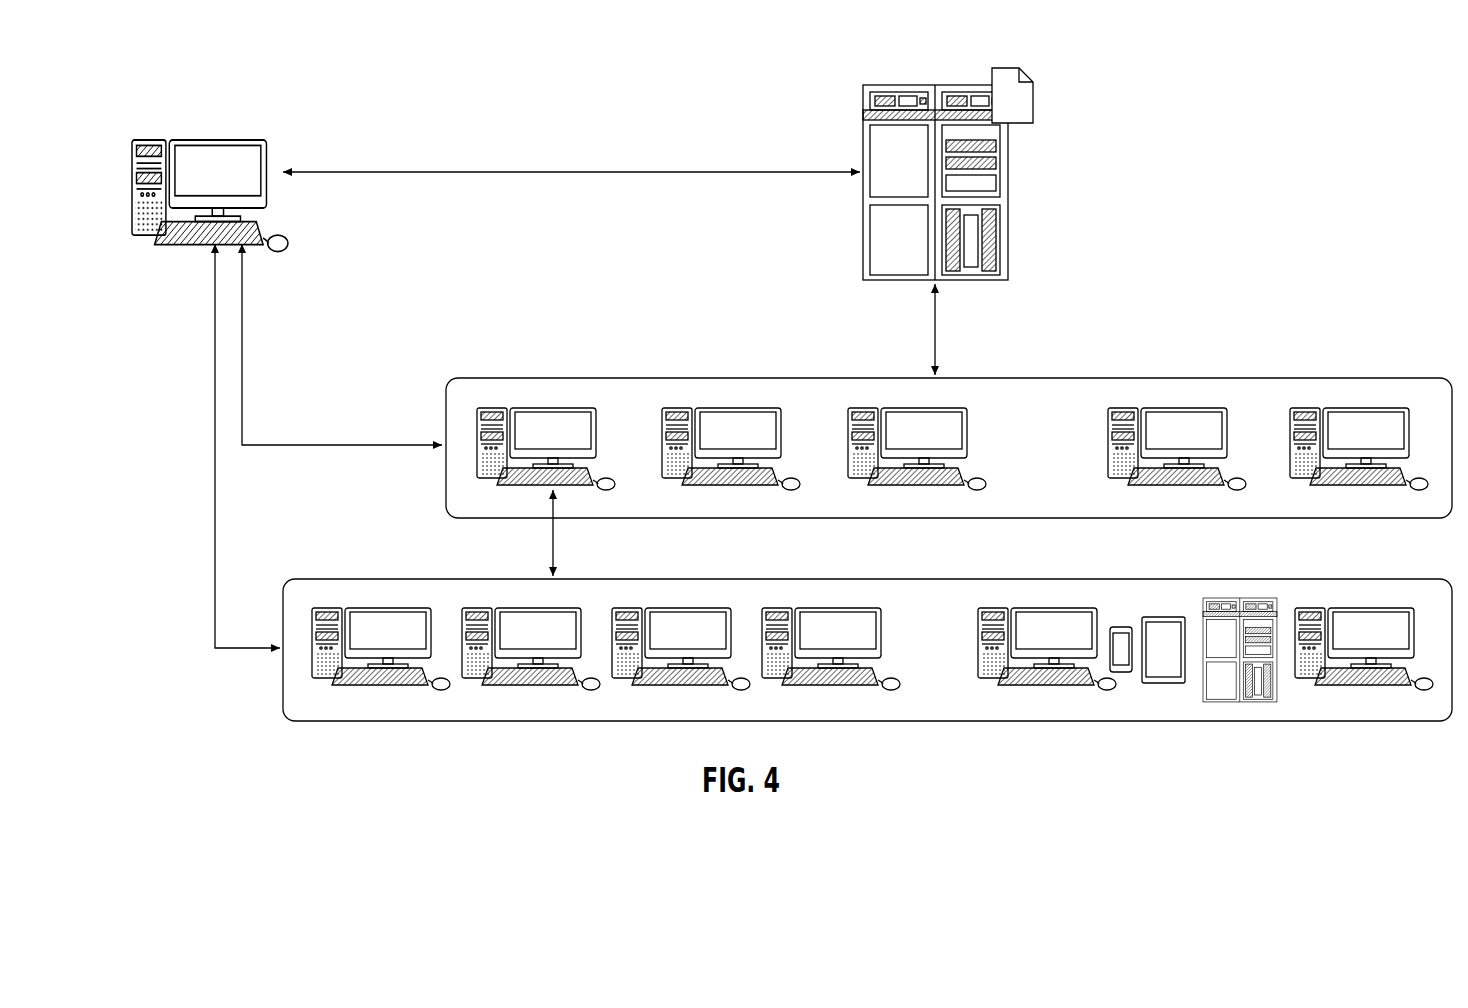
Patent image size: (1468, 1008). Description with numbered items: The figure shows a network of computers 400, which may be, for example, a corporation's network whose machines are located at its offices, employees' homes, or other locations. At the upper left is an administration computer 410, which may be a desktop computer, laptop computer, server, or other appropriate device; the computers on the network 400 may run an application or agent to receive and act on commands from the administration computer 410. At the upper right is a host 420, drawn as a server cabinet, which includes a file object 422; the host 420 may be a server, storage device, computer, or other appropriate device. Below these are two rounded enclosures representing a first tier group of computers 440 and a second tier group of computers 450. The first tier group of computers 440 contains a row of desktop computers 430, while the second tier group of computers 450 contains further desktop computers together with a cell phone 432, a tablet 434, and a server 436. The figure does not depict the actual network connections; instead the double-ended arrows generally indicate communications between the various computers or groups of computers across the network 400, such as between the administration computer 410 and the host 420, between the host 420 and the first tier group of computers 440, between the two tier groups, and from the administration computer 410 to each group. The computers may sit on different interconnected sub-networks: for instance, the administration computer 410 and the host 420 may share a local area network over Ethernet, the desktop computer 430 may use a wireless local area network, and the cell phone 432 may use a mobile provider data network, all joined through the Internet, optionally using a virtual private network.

The network of computers 400 is at (168, 64).
The administration computer 410 is at (152, 139).
The host 420 is at (862, 102).
The file object 422 is at (1035, 100).
The desktop computer 430 is at (555, 407).
The cell phone 432 is at (1121, 627).
The tablet 434 is at (1163, 616).
The server 436 is at (1243, 597).
The first tier group of computers 440 is at (1385, 377).
The second tier group of computers 450 is at (1385, 578).